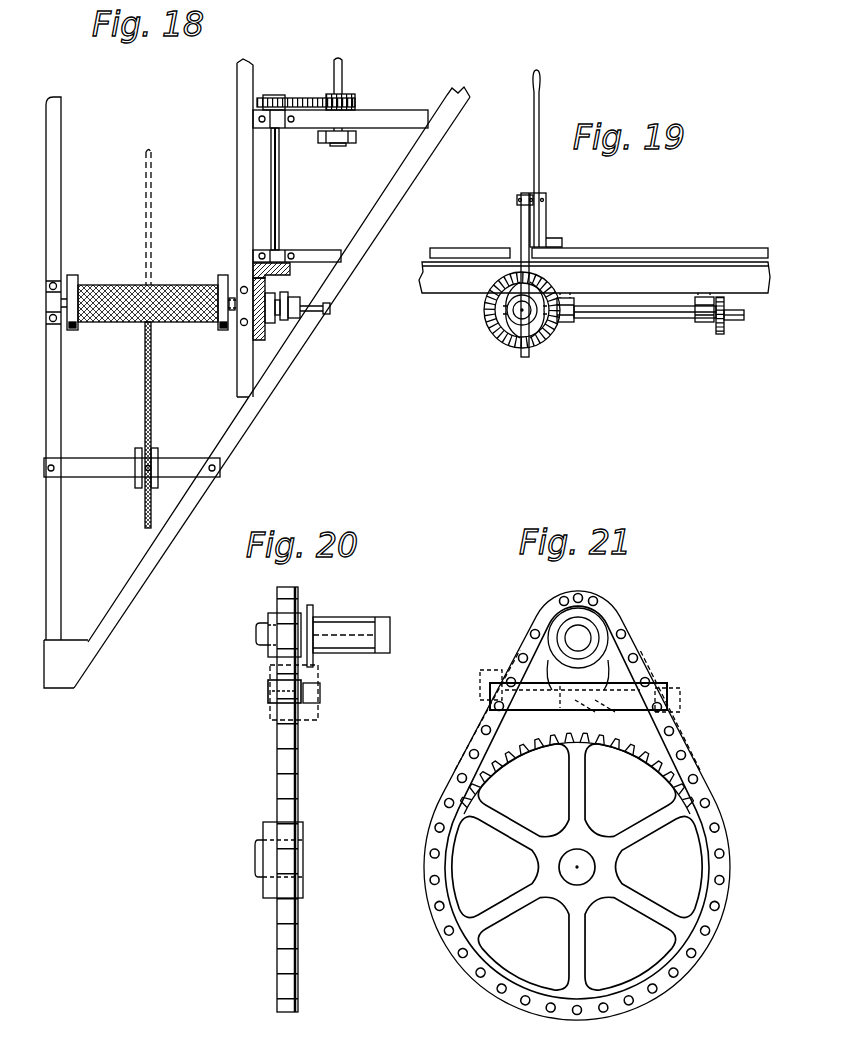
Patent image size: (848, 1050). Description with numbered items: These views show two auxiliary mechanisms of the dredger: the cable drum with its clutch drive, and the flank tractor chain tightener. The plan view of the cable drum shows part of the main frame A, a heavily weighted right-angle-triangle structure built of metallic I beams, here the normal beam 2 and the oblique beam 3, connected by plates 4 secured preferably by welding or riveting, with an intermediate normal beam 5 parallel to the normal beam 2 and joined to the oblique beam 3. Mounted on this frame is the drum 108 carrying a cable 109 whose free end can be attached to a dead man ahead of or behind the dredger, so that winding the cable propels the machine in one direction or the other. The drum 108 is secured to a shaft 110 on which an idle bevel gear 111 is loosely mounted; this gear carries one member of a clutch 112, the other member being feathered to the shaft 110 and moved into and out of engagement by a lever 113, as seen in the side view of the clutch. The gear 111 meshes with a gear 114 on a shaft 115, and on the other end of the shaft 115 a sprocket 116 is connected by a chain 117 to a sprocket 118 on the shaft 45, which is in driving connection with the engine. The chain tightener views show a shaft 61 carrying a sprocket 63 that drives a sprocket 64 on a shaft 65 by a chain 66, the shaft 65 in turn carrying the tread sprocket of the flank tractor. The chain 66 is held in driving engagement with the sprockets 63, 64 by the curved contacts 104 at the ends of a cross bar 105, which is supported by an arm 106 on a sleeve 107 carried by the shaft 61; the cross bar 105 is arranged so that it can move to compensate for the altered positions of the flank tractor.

In FIG. 18, the normal beam 2 is at (48, 530).
In FIG. 18, the oblique beam 3 is at (175, 527).
In FIG. 19, the oblique beam 3 is at (594, 270).
In FIG. 18, the plates 4 is at (445, 117).
In FIG. 18, the intermediate normal beam 5 is at (237, 383).
In FIG. 19, the intermediate normal beam 5 is at (492, 275).
In FIG. 18, the shaft 45 is at (343, 75).
In FIG. 19, the shaft 45 is at (744, 316).
In FIG. 20, the shaft 61 is at (256, 634).
In FIG. 21, the shaft 61 is at (582, 637).
In FIG. 20, the sprocket 63 is at (272, 613).
In FIG. 21, the sprocket 63 is at (620, 655).
In FIG. 20, the sprocket 64 is at (300, 840).
In FIG. 21, the sprocket 64 is at (512, 823).
In FIG. 20, the shaft 65 is at (258, 858).
In FIG. 21, the shaft 65 is at (582, 868).
In FIG. 20, the chain 66 is at (292, 765).
In FIG. 21, the chain 66 is at (478, 747).
In FIG. 20, the curved contact 104 is at (268, 690).
In FIG. 21, the curved contact 104 is at (495, 690).
In FIG. 20, the cross bar 105 is at (320, 692).
In FIG. 21, the cross bar 105 is at (612, 702).
In FIG. 20, the arm 106 is at (313, 660).
In FIG. 21, the arm 106 is at (560, 660).
In FIG. 20, the sleeve 107 is at (338, 628).
In FIG. 21, the sleeve 107 is at (572, 620).
In FIG. 18, the drum 108 is at (111, 284).
In FIG. 18, the cable 109 is at (152, 150).
In FIG. 18, the shaft 110 is at (300, 312).
In FIG. 18, the idle bevel gear 111 is at (262, 341).
In FIG. 19, the idle bevel gear 111 is at (497, 330).
In FIG. 18, the clutch 112 is at (281, 328).
In FIG. 19, the clutch 112 is at (482, 311).
In FIG. 19, the lever 113 is at (540, 172).
In FIG. 18, the gear 114 is at (283, 270).
In FIG. 19, the gear 114 is at (566, 323).
In FIG. 18, the shaft 115 is at (280, 182).
In FIG. 19, the shaft 115 is at (640, 318).
In FIG. 18, the sprocket 116 is at (272, 95).
In FIG. 18, the chain 117 is at (306, 93).
In FIG. 18, the sprocket 118 is at (355, 100).
In FIG. 19, the sprocket 118 is at (720, 334).
In FIG. 18, the main frame A is at (150, 585).